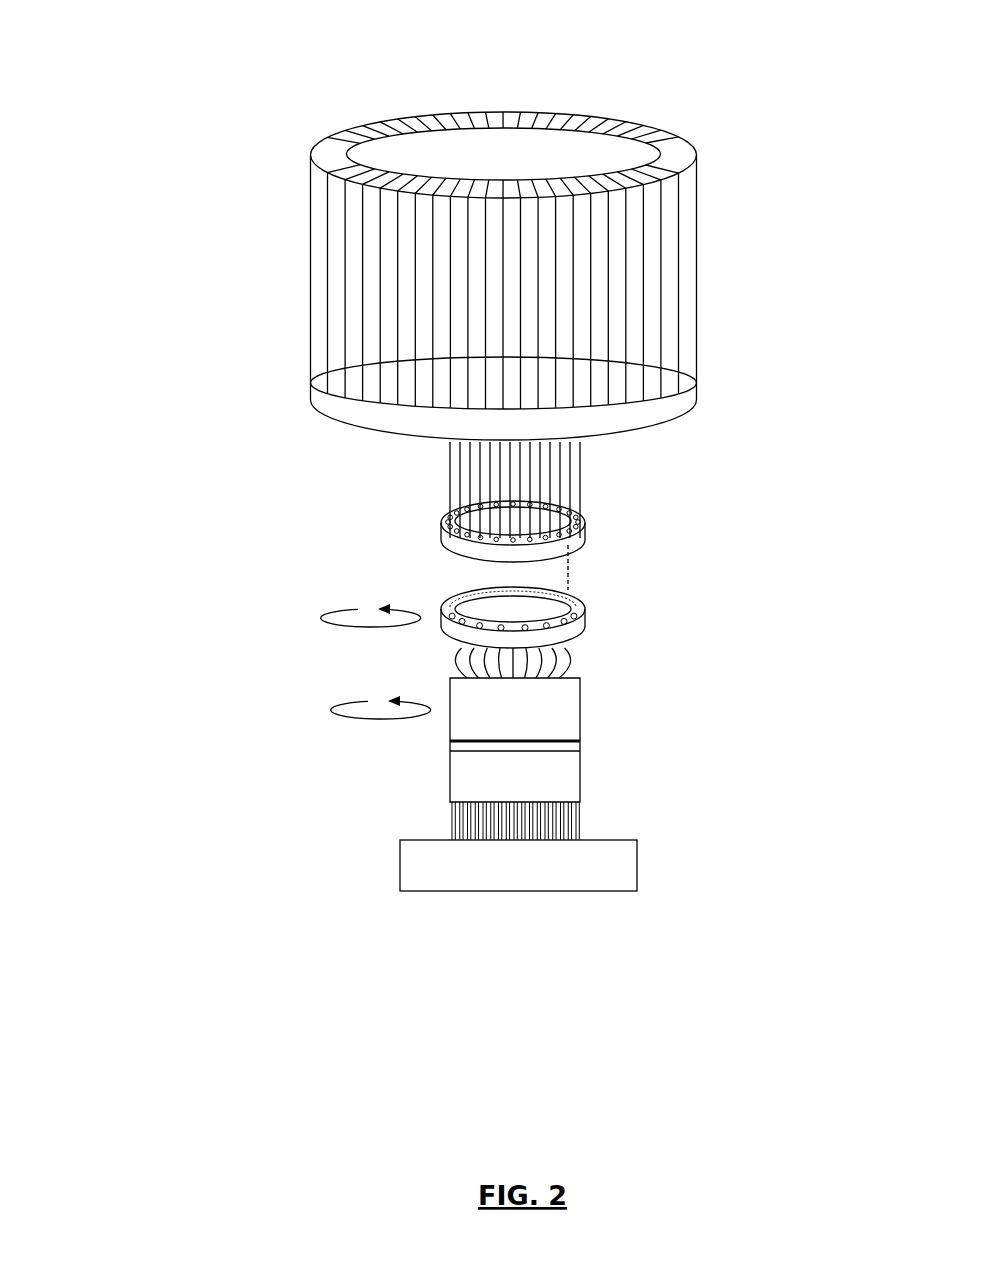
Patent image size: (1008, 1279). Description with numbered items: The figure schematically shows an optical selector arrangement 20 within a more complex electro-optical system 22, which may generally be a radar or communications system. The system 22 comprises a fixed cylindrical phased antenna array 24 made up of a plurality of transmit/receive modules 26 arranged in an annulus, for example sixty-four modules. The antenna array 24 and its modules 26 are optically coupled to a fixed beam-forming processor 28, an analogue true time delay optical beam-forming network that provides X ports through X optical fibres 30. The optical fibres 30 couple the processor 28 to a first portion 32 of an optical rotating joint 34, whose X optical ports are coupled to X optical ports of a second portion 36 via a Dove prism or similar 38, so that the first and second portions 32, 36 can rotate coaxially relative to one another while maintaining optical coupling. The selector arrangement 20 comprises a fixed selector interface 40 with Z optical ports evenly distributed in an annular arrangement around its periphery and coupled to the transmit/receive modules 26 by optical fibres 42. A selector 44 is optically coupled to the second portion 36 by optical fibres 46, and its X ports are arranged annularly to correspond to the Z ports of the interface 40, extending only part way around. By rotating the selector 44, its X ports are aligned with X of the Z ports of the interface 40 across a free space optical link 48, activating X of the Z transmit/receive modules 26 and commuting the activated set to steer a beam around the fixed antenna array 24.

The optical selector arrangement 20 is at (484, 753).
The electro-optical system 22 is at (454, 229).
The fixed cylindrical phased antenna array 24 is at (675, 103).
The transmit/receive modules 26 is at (690, 272).
The beam-forming processor 28 is at (527, 903).
The optical fibres 30 is at (445, 813).
The first portion 32 is at (583, 775).
The optical rotating joint 34 is at (514, 763).
The second portion 36 is at (447, 735).
The Dove prism 38 is at (447, 748).
The selector interface 40 is at (435, 539).
The optical fibres 42 is at (593, 475).
The selector 44 is at (596, 617).
The optical fibres 46 is at (585, 657).
The free space optical link 48 is at (583, 572).